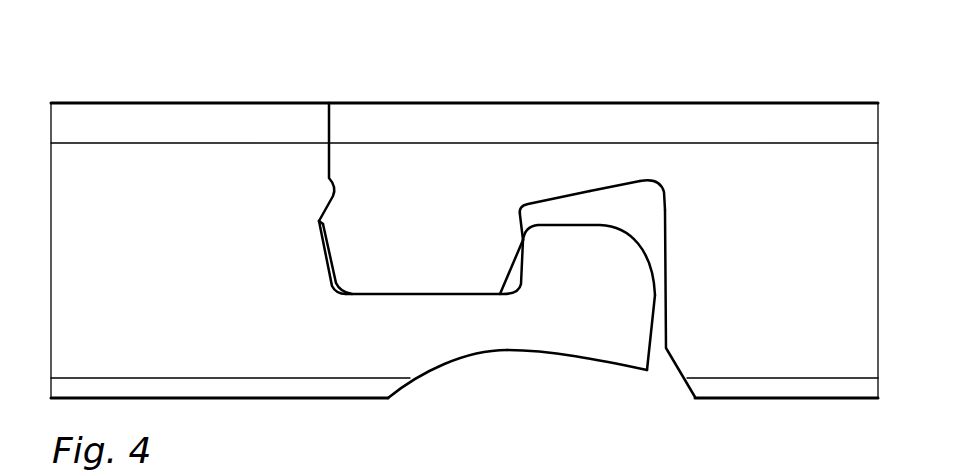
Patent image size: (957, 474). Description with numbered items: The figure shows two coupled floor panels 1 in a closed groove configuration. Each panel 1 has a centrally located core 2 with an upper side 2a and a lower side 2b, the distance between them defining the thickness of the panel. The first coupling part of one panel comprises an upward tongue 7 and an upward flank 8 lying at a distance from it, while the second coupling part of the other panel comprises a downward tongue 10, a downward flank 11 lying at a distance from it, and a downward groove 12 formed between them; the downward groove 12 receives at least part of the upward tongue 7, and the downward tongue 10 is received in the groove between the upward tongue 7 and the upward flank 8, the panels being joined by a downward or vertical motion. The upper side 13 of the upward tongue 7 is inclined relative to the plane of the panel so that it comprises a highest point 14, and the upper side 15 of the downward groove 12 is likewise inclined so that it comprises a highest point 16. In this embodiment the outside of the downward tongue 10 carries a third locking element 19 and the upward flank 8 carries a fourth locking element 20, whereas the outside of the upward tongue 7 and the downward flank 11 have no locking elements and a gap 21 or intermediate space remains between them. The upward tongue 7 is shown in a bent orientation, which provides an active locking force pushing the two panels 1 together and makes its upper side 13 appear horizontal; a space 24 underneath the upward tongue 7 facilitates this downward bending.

The panel 1 is at (222, 93).
The core 2 is at (173, 261).
The upper side 2a is at (120, 102).
The lower side 2b is at (238, 400).
The upward tongue 7 is at (592, 305).
The upward flank 8 is at (328, 155).
The downward tongue 10 is at (408, 258).
The downward flank 11 is at (668, 272).
The downward groove 12 is at (593, 207).
The upper side of the upward tongue 13 is at (578, 223).
The highest point 14 is at (636, 236).
The upper side of the downward groove 15 is at (615, 182).
The highest point 16 is at (660, 183).
The third locking element 19 is at (323, 222).
The fourth locking element 20 is at (328, 192).
The gap 21 is at (657, 335).
The space 24 is at (490, 368).